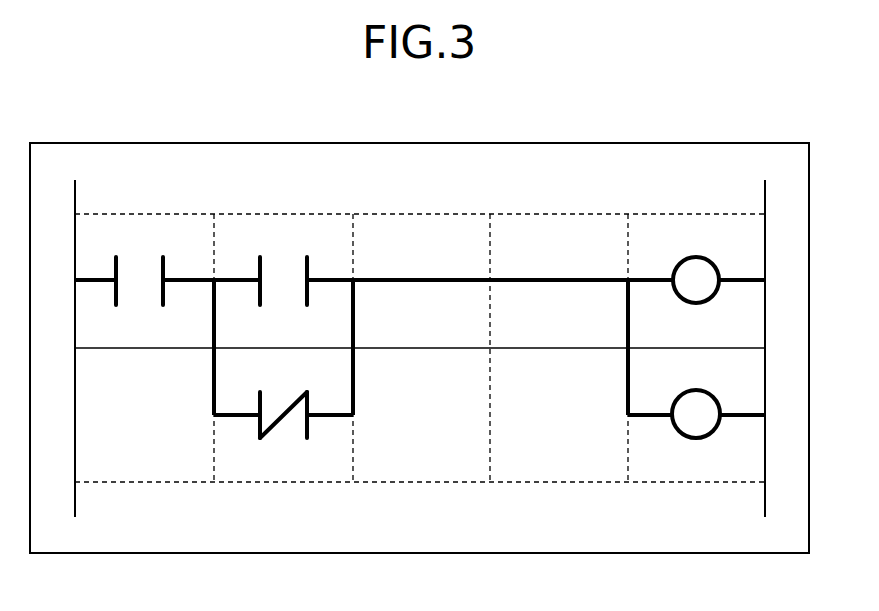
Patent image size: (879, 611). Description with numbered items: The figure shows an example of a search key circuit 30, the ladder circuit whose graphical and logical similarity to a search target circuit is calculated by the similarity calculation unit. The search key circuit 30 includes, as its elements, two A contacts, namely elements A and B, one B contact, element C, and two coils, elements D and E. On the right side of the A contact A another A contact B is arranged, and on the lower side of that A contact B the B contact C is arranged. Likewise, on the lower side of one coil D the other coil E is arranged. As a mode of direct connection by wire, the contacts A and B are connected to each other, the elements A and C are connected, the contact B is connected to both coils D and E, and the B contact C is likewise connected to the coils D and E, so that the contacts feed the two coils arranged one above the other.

The search key circuit 30 is at (722, 143).
The A contact A is at (139, 266).
The A contact B is at (283, 266).
The B contact C is at (283, 401).
The coil D is at (696, 264).
The coil E is at (696, 400).